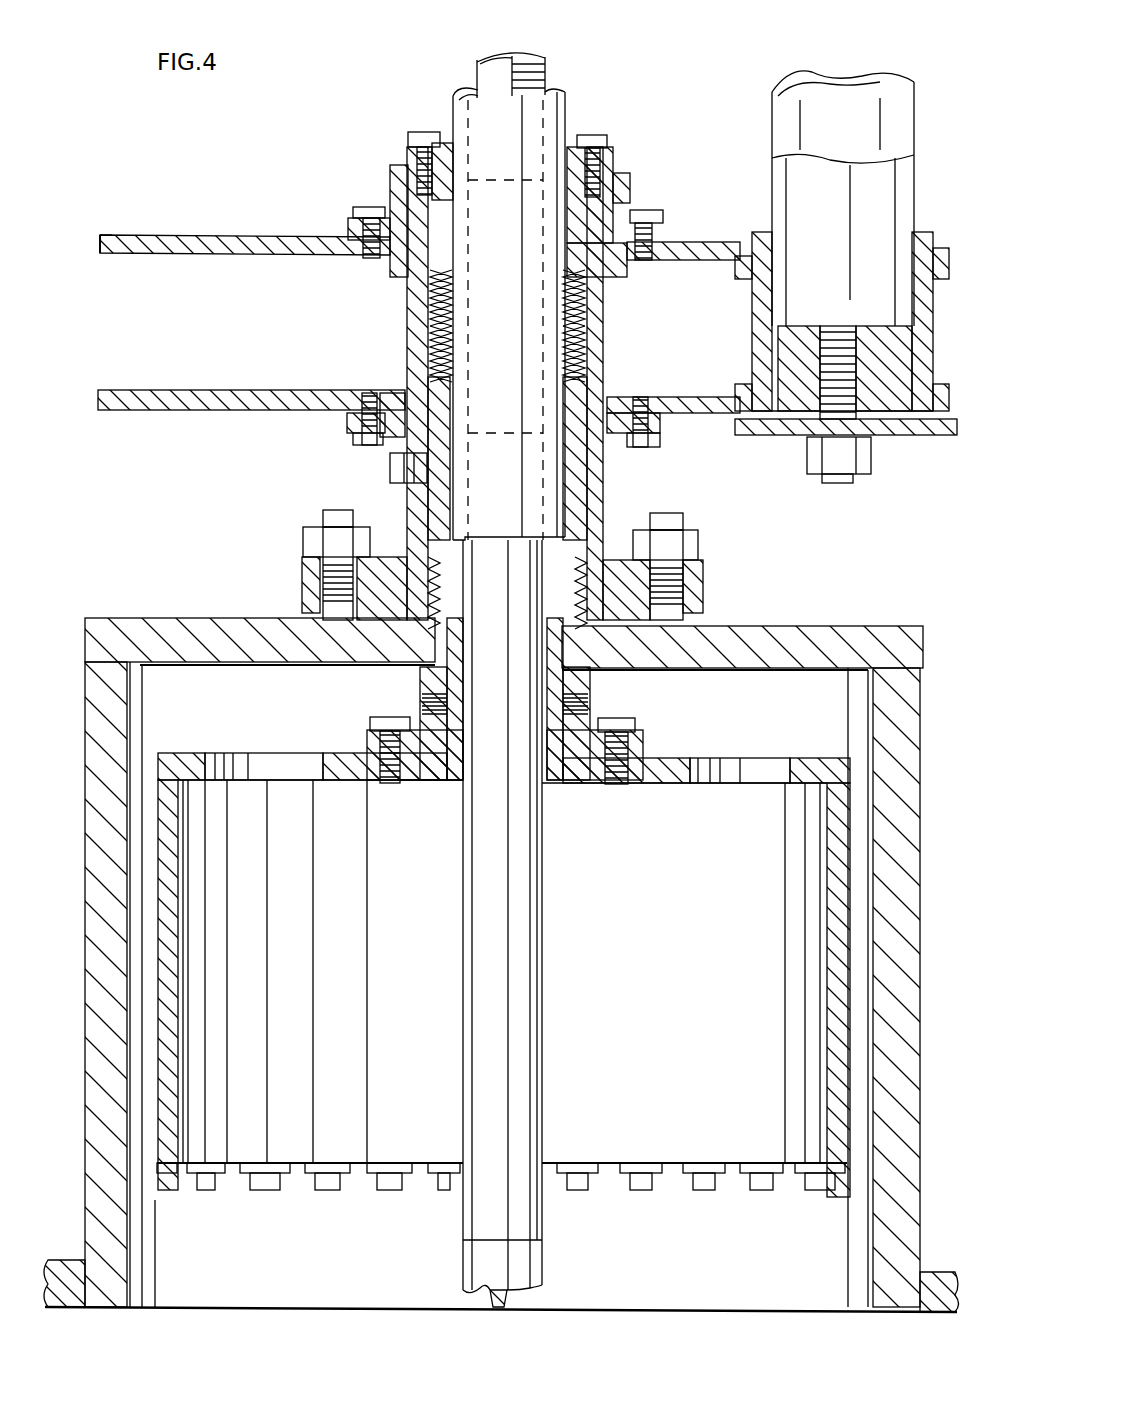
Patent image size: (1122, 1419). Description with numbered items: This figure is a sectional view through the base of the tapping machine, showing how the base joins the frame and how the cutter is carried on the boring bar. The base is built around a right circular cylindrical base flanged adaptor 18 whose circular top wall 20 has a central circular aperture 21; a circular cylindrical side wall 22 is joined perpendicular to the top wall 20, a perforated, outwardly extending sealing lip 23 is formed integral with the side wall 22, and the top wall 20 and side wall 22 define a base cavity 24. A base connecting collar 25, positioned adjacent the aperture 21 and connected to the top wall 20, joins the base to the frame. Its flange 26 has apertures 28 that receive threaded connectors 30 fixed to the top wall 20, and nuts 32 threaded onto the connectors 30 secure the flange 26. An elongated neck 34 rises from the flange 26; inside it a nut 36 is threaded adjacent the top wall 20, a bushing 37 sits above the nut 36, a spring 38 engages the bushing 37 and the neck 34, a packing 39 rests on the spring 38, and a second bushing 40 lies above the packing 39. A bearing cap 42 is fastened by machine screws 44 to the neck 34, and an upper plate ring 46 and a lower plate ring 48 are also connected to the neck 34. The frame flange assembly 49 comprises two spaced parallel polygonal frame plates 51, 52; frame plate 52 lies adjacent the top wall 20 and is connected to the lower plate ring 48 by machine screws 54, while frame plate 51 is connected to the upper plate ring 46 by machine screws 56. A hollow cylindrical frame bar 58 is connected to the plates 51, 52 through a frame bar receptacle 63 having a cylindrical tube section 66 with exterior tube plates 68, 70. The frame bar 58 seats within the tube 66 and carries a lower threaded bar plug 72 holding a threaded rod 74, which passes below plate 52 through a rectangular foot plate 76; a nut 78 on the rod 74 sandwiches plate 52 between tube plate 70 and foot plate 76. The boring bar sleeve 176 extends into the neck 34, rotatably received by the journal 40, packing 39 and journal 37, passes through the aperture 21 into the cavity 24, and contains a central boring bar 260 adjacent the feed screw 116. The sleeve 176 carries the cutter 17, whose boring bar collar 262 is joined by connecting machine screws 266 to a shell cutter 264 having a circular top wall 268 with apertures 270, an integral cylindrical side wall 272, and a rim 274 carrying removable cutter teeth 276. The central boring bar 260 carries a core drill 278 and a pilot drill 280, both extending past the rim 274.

The cutter 17 is at (653, 1049).
The base flanged adaptor 18 is at (105, 900).
The top wall 20 is at (150, 630).
The central circular aperture 21 is at (430, 672).
The side wall 22 is at (100, 752).
The sealing lip 23 is at (66, 1275).
The base cavity 24 is at (800, 680).
The base connecting collar 25 is at (592, 490).
The flange 26 is at (380, 590).
The apertures 28 is at (312, 615).
The threaded connectors 30 is at (330, 516).
The nuts 32 is at (310, 540).
The neck 34 is at (415, 330).
The nut 36 is at (620, 580).
The bushing 37 is at (578, 395).
The spring 38 is at (585, 332).
The packing 39 is at (582, 290).
The second bushing 40 is at (620, 214).
The bearing cap 42 is at (395, 168).
The machine screws 44 is at (418, 134).
The upper plate ring 46 is at (355, 233).
The lower plate ring 48 is at (348, 422).
The frame flange assembly 49 is at (250, 243).
The frame plate 51 is at (135, 244).
The frame plate 52 is at (130, 405).
The machine screws 54 is at (355, 440).
The machine screws 56 is at (366, 208).
The frame bar 58 is at (778, 104).
The frame bar receptacle 63 is at (935, 395).
The cylindrical tube section 66 is at (925, 298).
The tube plate 68 is at (730, 258).
The tube plate 70 is at (730, 404).
The threaded bar plug 72 is at (805, 335).
The threaded rod 74 is at (838, 340).
The rectangular foot plate 76 is at (770, 433).
The nut 78 is at (862, 456).
The feed screw 116 is at (530, 90).
The boring bar sleeve 176 is at (458, 110).
The central boring bar 260 is at (530, 942).
The boring bar collar 262 is at (578, 738).
The shell cutter 264 is at (165, 760).
The connecting machine screws 266 is at (362, 724).
The top wall 268 is at (820, 775).
The apertures 270 is at (240, 765).
The cylindrical side wall 272 is at (168, 1000).
The rim 274 is at (240, 1160).
The cutter teeth 276 is at (262, 1193).
The core drill 278 is at (525, 1265).
The pilot drill 280 is at (505, 1302).